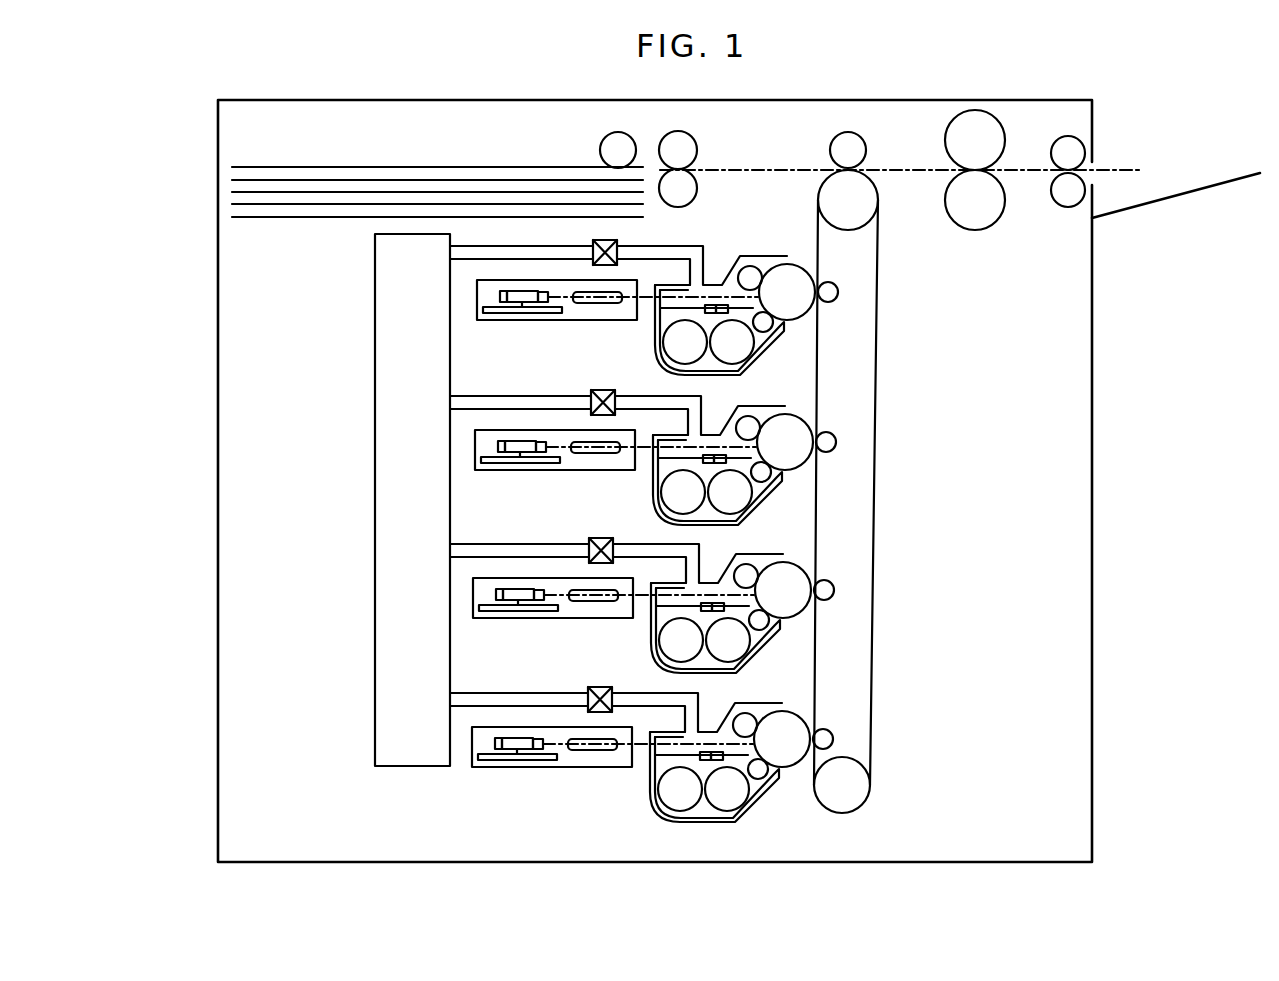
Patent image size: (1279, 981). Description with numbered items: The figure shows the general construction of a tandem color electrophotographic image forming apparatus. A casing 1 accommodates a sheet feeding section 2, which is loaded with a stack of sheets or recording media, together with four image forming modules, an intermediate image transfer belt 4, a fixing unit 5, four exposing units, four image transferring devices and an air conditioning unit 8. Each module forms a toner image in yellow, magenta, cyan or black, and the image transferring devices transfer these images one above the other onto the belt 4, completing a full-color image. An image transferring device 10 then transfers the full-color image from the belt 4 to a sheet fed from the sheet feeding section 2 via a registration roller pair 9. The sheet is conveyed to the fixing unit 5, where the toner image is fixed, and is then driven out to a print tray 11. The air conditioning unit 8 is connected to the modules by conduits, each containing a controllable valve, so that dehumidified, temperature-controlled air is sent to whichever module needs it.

The casing 1 is at (218, 351).
The sheet feeding section 2 is at (262, 218).
The intermediate image transfer belt 4 is at (878, 385).
The fixing unit 5 is at (945, 143).
The air conditioning unit 8 is at (378, 385).
The registration roller pair 9 is at (697, 150).
The image transferring device 10 is at (830, 150).
The print tray 11 is at (1213, 190).